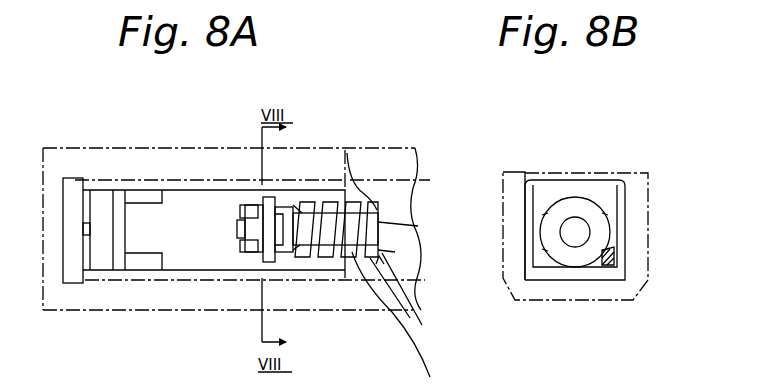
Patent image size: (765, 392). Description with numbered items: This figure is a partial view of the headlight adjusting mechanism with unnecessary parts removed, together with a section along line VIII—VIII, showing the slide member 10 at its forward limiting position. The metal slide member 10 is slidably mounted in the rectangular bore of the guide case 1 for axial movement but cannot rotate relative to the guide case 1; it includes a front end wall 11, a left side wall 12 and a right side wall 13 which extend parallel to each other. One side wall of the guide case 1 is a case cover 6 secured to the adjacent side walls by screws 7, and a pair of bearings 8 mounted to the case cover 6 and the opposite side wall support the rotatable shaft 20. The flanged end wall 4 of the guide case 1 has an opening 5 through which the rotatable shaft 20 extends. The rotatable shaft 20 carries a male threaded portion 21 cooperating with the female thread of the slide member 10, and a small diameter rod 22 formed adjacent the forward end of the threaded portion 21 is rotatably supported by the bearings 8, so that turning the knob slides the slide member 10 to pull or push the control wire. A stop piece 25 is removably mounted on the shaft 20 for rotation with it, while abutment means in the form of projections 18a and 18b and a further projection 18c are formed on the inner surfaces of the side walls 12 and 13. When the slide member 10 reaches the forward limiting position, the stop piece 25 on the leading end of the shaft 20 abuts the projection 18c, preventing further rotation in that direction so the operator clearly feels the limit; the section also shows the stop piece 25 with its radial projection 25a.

In FIG. 8A, the guide case 1 is at (121, 147).
In FIG. 8B, the guide case 1 is at (650, 178).
In FIG. 8A, the flanged end wall 4 is at (320, 262).
In FIG. 8A, the opening 5 is at (394, 321).
In FIG. 8A, the case cover 6 is at (407, 197).
In FIG. 8A, the screws 7 is at (83, 224).
In FIG. 8A, the bearings 8 is at (262, 197).
In FIG. 8A, the slide member 10 is at (164, 176).
In FIG. 8B, the slide member 10 is at (548, 175).
In FIG. 8A, the front end wall 11 is at (120, 228).
In FIG. 8A, the left side wall 12 is at (200, 277).
In FIG. 8B, the left side wall 12 is at (620, 215).
In FIG. 8B, the right side wall 13 is at (526, 198).
In FIG. 8A, the projection 18a is at (148, 262).
In FIG. 8A, the projection 18b is at (148, 198).
In FIG. 8A, the projection 18c is at (290, 262).
In FIG. 8B, the projection 18c is at (615, 258).
In FIG. 8A, the rotatable shaft 20 is at (422, 325).
In FIG. 8A, the male threaded portion 21 is at (375, 238).
In FIG. 8A, the small diameter rod 22 is at (235, 235).
In FIG. 8A, the stop piece 25 is at (250, 206).
In FIG. 8B, the stop piece 25 is at (599, 233).
In FIG. 8A, the collar 25a is at (281, 210).
In FIG. 8B, the collar 25a is at (577, 257).